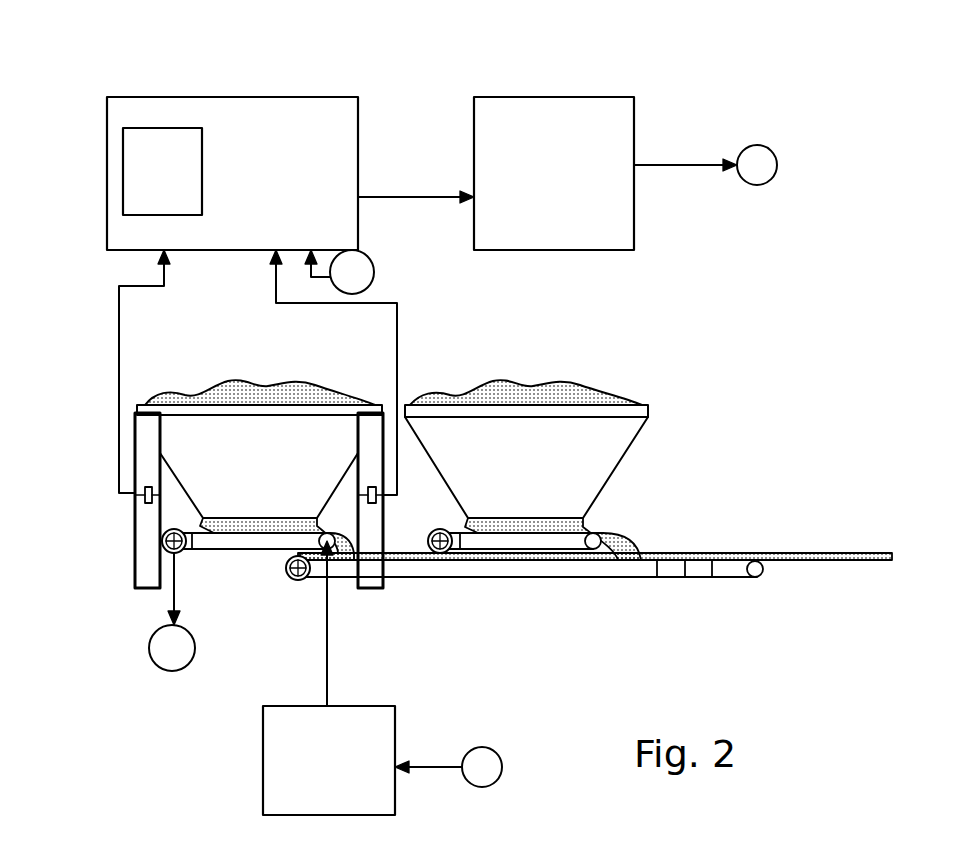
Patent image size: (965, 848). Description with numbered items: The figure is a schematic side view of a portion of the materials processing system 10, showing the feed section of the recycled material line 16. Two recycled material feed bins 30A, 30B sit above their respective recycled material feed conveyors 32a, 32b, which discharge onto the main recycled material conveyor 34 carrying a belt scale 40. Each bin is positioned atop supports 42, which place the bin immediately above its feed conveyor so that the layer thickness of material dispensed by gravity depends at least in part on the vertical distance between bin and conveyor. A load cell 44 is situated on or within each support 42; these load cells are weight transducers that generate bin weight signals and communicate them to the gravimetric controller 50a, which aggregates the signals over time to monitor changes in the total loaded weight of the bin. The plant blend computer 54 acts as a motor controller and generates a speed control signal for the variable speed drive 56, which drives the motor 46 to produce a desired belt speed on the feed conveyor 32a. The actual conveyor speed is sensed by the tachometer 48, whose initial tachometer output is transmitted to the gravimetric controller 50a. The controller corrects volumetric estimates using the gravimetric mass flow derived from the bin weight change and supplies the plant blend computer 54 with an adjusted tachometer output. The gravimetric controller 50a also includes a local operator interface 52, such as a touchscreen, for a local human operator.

The materials processing system 10 is at (712, 95).
The recycled material line 16 is at (695, 342).
The recycled material feed bin 30A is at (230, 432).
The recycled material feed bin 30B is at (505, 428).
The recycled material feed conveyor 32a is at (253, 541).
The recycled material feed conveyor 32b is at (533, 540).
The main recycled material conveyor 34 is at (487, 567).
The belt scale 40 is at (695, 578).
The supports 42 is at (145, 567).
The load cells 44 is at (145, 505).
The motor 46 is at (337, 550).
The tachometer 48 is at (178, 550).
The gravimetric controller 50a is at (143, 97).
The local operator interface 52 is at (190, 197).
The plant blend computer 54 is at (548, 252).
The variable speed drive 56 is at (263, 768).